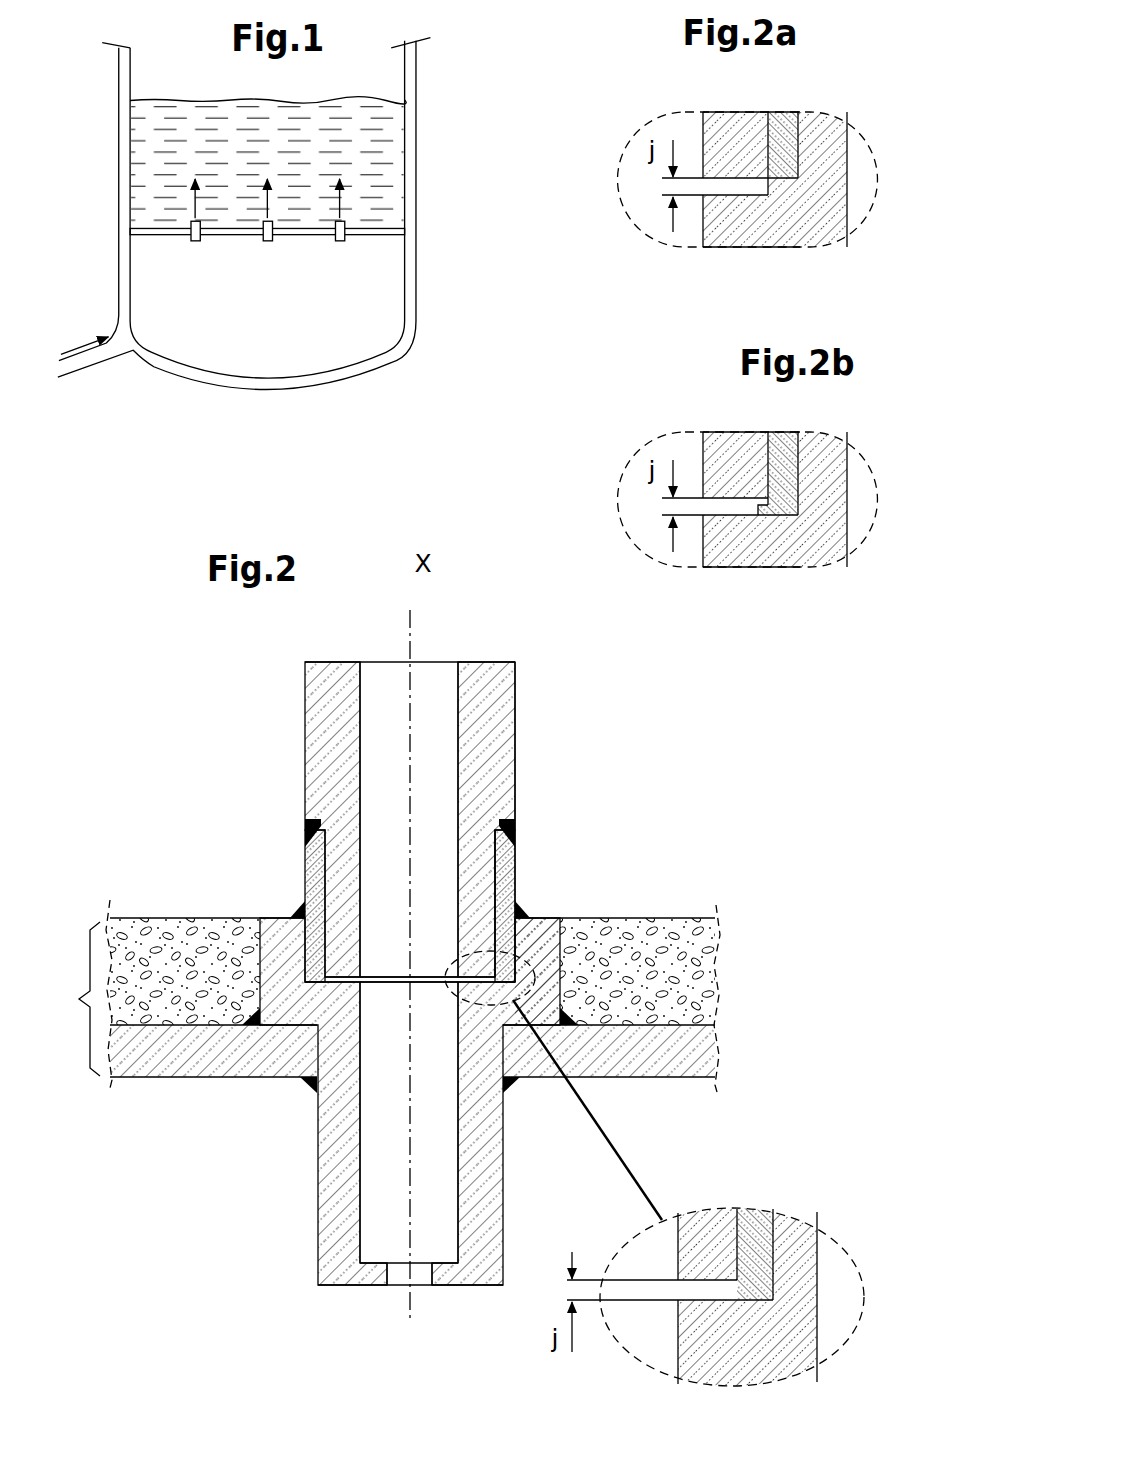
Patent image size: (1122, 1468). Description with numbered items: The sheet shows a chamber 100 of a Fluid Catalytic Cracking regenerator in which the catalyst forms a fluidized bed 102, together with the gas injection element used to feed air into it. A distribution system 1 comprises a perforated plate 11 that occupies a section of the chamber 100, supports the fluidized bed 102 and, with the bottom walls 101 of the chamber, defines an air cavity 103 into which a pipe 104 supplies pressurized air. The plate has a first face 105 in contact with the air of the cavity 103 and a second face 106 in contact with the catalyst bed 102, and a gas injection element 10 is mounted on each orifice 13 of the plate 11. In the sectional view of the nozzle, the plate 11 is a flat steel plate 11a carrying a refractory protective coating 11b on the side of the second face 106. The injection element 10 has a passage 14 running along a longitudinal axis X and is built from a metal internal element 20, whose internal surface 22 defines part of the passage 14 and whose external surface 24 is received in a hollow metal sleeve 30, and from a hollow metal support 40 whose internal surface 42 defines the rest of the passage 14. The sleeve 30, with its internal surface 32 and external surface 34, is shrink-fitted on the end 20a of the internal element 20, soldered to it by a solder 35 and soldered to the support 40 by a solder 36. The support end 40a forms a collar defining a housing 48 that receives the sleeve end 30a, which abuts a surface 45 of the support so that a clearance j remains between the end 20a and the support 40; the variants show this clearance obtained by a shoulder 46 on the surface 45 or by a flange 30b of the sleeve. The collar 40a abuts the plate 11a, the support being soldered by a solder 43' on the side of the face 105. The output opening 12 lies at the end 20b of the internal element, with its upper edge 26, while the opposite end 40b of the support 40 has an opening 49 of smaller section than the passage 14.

In FIG. 1, the distribution system 1 is at (376, 237).
In FIG. 1, the gas injection element 10 is at (258, 235).
In FIG. 2, the gas injection element 10 is at (648, 777).
In FIG. 1, the perforated plate 11 is at (377, 228).
In FIG. 2, the perforated plate 11 is at (378, 996).
In FIG. 2, the flat plate 11a is at (194, 1067).
In FIG. 2, the protective coating 11b is at (157, 933).
In FIG. 2, the output opening 12 is at (458, 686).
In FIG. 1, the orifice 13 is at (263, 233).
In FIG. 2, the passage 14 is at (425, 680).
In FIG. 2, the internal element 20 is at (505, 718).
In FIG. 2A, the end of the internal element 20a is at (712, 130).
In FIG. 2B, the end of the internal element 20a is at (735, 449).
In FIG. 2, the end of the internal element 20a is at (343, 884).
In FIG. 2, the end of the internal element 20b is at (316, 690).
In FIG. 2, the internal surface 22 is at (362, 709).
In FIG. 2, the external surface 24 is at (518, 773).
In FIG. 2, the upper end of tube 26 is at (490, 662).
In FIG. 2, the sleeve 30 is at (318, 852).
In FIG. 2A, the end of the sleeve 30a is at (782, 130).
In FIG. 2B, the end of the sleeve 30a is at (785, 462).
In FIG. 2, the end of the sleeve 30a is at (506, 937).
In FIG. 2B, the flange 30b is at (765, 518).
In FIG. 2, the internal surface 32 is at (490, 853).
In FIG. 2, the external surface 34 is at (519, 870).
In FIG. 2, the solder 35 is at (306, 829).
In FIG. 2, the solder 36 is at (298, 910).
In FIG. 2, the support 40 is at (327, 1217).
In FIG. 2A, the end of the support 40a is at (838, 165).
In FIG. 2B, the end of the support 40a is at (825, 530).
In FIG. 2, the end of the support 40a is at (549, 985).
In FIG. 2, the end of the support 40b is at (332, 1263).
In FIG. 2, the internal surface 42 is at (456, 1134).
In FIG. 2, the solder 43' is at (379, 1122).
In FIG. 2A, the surface 45 is at (717, 187).
In FIG. 2B, the surface 45 is at (723, 509).
In FIG. 2, the surface 45 is at (684, 1292).
In FIG. 2A, the shoulder 46 is at (782, 167).
In FIG. 2, the housing 48 is at (456, 975).
In FIG. 2, the opening 49 is at (430, 1270).
In FIG. 1, the chamber 100 is at (410, 164).
In FIG. 1, the vessel side wall 101 is at (399, 330).
In FIG. 1, the fluidized bed 102 is at (140, 145).
In FIG. 1, the air cavity 103 is at (331, 338).
In FIG. 1, the pipe 104 is at (120, 346).
In FIG. 1, the first face 105 is at (360, 233).
In FIG. 2, the first face 105 is at (688, 1079).
In FIG. 1, the second face 106 is at (367, 222).
In FIG. 2, the second face 106 is at (678, 916).